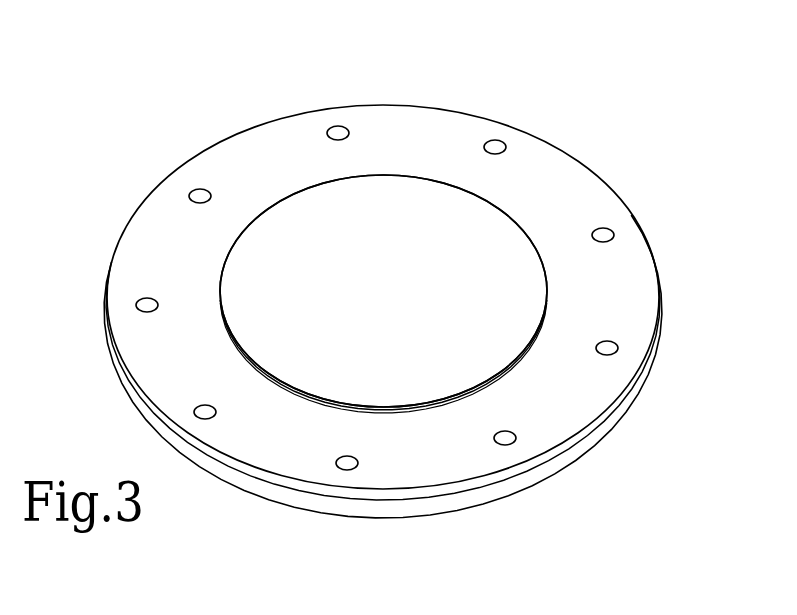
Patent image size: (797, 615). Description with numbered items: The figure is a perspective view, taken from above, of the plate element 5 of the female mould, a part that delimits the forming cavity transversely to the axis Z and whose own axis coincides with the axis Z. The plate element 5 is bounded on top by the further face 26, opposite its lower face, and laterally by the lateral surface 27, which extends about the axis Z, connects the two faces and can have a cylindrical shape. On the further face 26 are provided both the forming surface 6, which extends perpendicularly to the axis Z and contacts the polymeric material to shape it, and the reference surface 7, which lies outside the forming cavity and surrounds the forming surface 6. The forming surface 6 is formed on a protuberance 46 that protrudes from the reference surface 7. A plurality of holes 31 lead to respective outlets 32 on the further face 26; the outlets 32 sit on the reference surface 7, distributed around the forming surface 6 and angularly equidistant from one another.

The plate element 5 is at (387, 308).
The forming surface 6 is at (403, 215).
The reference surface 7 is at (552, 197).
The further face 26 is at (315, 260).
The lateral surface 27 is at (625, 408).
The holes 31 is at (339, 133).
The outlets 32 is at (497, 146).
The protuberance 46 is at (545, 316).